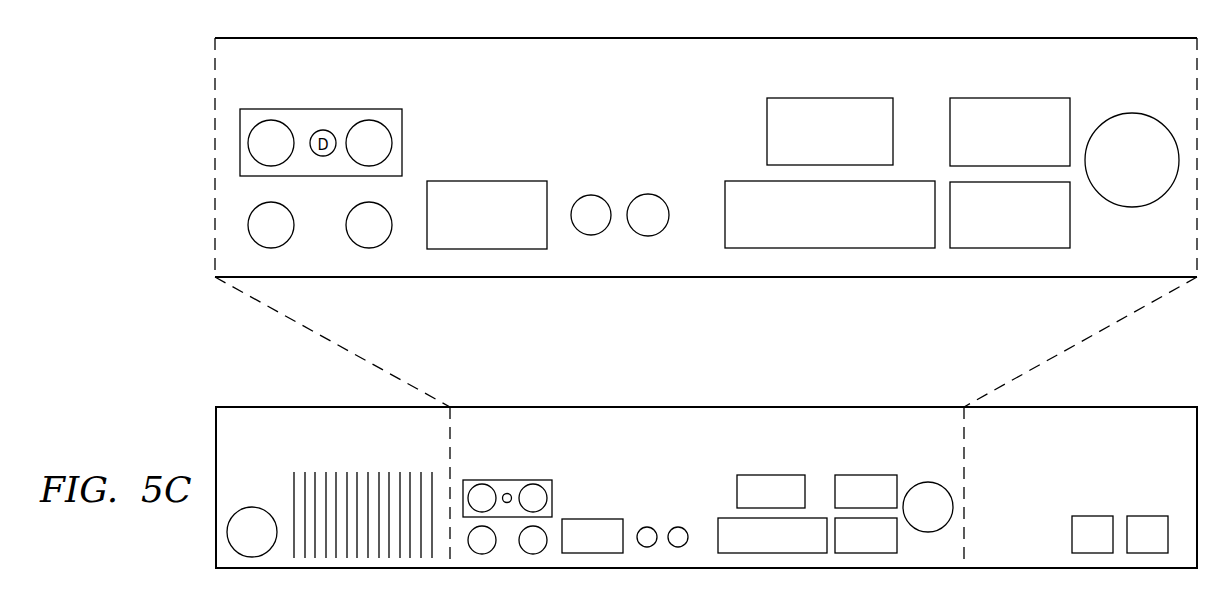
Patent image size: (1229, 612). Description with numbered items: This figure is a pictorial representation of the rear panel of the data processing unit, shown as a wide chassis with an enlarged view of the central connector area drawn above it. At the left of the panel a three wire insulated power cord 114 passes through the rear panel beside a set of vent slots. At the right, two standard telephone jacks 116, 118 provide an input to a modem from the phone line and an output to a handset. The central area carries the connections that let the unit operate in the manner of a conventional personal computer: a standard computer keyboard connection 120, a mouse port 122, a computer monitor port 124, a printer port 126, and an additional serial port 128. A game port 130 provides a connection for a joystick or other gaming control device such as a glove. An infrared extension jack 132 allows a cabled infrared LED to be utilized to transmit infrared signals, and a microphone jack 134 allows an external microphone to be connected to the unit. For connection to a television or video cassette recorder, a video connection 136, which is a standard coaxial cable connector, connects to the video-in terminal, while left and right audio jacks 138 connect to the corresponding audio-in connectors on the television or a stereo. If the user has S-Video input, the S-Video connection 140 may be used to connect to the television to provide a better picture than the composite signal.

The power cord 114 is at (252, 507).
The telephone jack 116 is at (1093, 516).
The telephone jack 118 is at (1147, 516).
The computer keyboard connection 120 is at (1130, 113).
The mouse port 122 is at (1012, 98).
The computer monitor port 124 is at (830, 98).
The printer port 126 is at (738, 181).
The serial port 128 is at (1070, 228).
The game port 130 is at (486, 181).
The infrared extension jack 132 is at (591, 195).
The microphone jack 134 is at (648, 194).
The video connection 136 is at (369, 120).
The left and right audio jacks 138 is at (271, 120).
The S-Video connection 140 is at (352, 241).